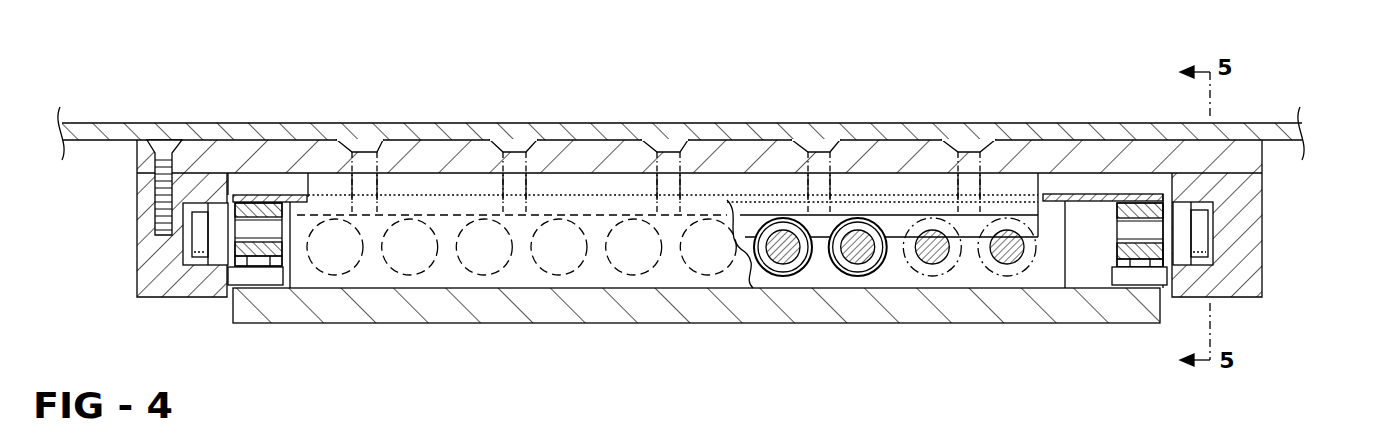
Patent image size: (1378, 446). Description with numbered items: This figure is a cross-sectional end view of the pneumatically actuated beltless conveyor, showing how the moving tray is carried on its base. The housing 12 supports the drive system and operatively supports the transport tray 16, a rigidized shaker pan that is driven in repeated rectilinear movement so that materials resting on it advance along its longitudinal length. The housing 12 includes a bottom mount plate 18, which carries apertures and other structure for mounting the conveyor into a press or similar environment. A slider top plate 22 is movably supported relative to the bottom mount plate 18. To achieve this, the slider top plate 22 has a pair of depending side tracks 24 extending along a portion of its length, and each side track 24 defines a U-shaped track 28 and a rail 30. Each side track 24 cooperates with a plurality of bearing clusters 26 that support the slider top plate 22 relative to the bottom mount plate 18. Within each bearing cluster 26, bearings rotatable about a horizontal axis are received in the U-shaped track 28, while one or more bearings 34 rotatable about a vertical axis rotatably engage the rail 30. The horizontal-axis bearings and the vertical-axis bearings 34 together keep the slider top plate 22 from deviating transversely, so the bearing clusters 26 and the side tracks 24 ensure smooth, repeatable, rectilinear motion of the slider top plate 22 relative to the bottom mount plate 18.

The housing 12 is at (1036, 96).
The transport tray 16 is at (758, 130).
The bottom mount plate 18 is at (918, 307).
The slider top plate 22 is at (480, 138).
The side tracks 24 is at (135, 200).
The bearing clusters 26 is at (217, 220).
The U-shaped track 28 is at (177, 270).
The rail 30 is at (697, 299).
The bearings 34 is at (273, 270).